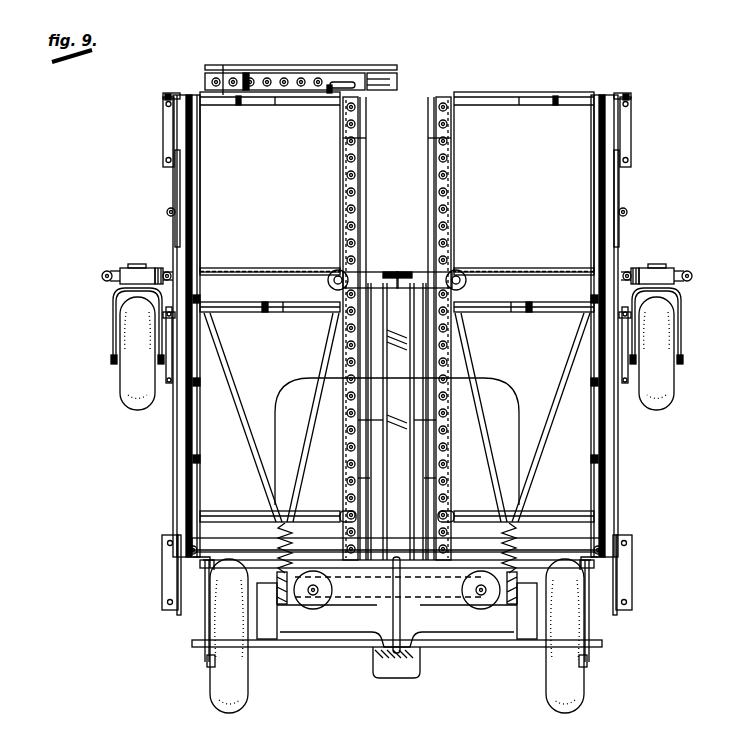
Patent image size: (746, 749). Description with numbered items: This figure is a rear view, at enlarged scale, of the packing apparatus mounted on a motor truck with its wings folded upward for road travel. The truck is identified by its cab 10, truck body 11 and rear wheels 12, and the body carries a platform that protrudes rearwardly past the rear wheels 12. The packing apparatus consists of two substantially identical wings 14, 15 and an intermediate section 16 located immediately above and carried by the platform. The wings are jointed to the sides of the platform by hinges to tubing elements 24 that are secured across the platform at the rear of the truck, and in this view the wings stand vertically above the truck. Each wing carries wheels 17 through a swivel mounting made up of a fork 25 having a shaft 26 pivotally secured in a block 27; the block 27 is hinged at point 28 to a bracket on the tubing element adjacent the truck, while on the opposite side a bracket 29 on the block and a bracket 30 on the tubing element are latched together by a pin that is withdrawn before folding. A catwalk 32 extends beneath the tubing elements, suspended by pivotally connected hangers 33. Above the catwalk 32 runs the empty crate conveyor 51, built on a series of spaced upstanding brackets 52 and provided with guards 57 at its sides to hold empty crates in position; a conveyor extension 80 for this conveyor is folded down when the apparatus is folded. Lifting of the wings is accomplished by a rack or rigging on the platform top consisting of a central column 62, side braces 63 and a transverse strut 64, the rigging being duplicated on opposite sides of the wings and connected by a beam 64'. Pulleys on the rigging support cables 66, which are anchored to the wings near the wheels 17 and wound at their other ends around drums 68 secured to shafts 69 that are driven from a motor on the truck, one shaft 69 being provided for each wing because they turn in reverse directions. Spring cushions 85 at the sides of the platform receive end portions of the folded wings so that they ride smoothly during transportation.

The cab 10 is at (290, 395).
The truck body 11 is at (288, 601).
The rear wheels 12 is at (250, 688).
The wing 14 is at (620, 93).
The wing 15 is at (169, 92).
The intermediate section 16 is at (596, 578).
The wheels 17 is at (123, 398).
The tubing elements 24 is at (358, 562).
The fork 25 is at (113, 335).
The shaft 26 is at (130, 266).
The block 27 is at (122, 285).
The hinge point 28 is at (167, 270).
The bracket 29 is at (104, 280).
The bracket 30 is at (167, 212).
The catwalk 32 is at (620, 185).
The hangers 33 is at (163, 135).
The empty crate conveyor 51 is at (345, 203).
The upstanding brackets 52 is at (238, 100).
The guards 57 is at (426, 180).
The central column 62 is at (397, 421).
The side braces 63 is at (330, 356).
The transverse strut 64 is at (363, 267).
The beam 64' is at (431, 267).
The cables 66 is at (296, 268).
The drums 68 is at (320, 600).
The shafts 69 is at (479, 594).
The conveyor extension 80 is at (322, 76).
The spring cushions 85 is at (281, 530).